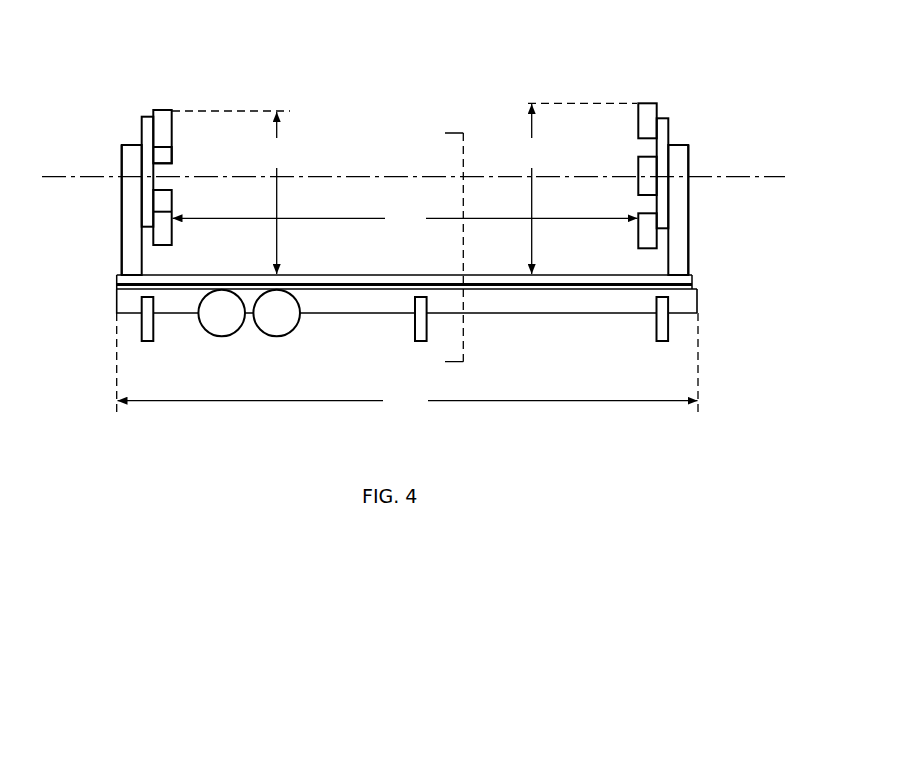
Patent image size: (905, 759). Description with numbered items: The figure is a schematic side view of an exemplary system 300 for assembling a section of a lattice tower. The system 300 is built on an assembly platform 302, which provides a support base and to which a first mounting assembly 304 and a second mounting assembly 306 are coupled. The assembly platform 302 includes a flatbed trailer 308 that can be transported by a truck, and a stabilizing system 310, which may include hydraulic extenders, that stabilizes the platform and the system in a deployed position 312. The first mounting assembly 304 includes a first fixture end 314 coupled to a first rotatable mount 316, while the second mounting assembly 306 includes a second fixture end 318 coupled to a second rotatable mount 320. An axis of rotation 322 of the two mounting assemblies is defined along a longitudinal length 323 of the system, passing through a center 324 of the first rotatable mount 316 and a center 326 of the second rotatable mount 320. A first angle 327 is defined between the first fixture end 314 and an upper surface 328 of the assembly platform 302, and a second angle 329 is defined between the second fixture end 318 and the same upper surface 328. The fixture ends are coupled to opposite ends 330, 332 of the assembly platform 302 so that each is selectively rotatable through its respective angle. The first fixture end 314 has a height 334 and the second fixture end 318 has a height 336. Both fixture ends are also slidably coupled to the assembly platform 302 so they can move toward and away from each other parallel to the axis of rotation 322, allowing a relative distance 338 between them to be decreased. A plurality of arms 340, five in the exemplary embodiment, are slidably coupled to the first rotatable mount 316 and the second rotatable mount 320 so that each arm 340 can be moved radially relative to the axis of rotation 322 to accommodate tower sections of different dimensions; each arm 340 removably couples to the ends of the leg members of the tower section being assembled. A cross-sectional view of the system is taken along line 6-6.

The system 300 is at (496, 47).
The assembly platform 302 is at (693, 280).
The first mounting assembly 304 is at (122, 253).
The second mounting assembly 306 is at (681, 258).
The flatbed trailer 308 is at (116, 306).
The stabilizing system 310 is at (661, 336).
The deployed position 312 is at (310, 66).
The first fixture end 314 is at (122, 222).
The first rotatable mount 316 is at (142, 125).
The second fixture end 318 is at (681, 228).
The second rotatable mount 320 is at (665, 128).
The axis of rotation 322 is at (725, 176).
The longitudinal length 323 is at (407, 364).
The center 324 is at (160, 176).
The center 326 is at (655, 176).
The first angle 327 is at (216, 272).
The upper surface 328 is at (329, 272).
The second angle 329 is at (635, 232).
The end 330 is at (117, 290).
The end 332 is at (698, 302).
The height 334 is at (231, 192).
The height 336 is at (576, 188).
The relative distance 338 is at (405, 218).
The arms 340 is at (160, 110).
The line 6- 6 is at (438, 133).